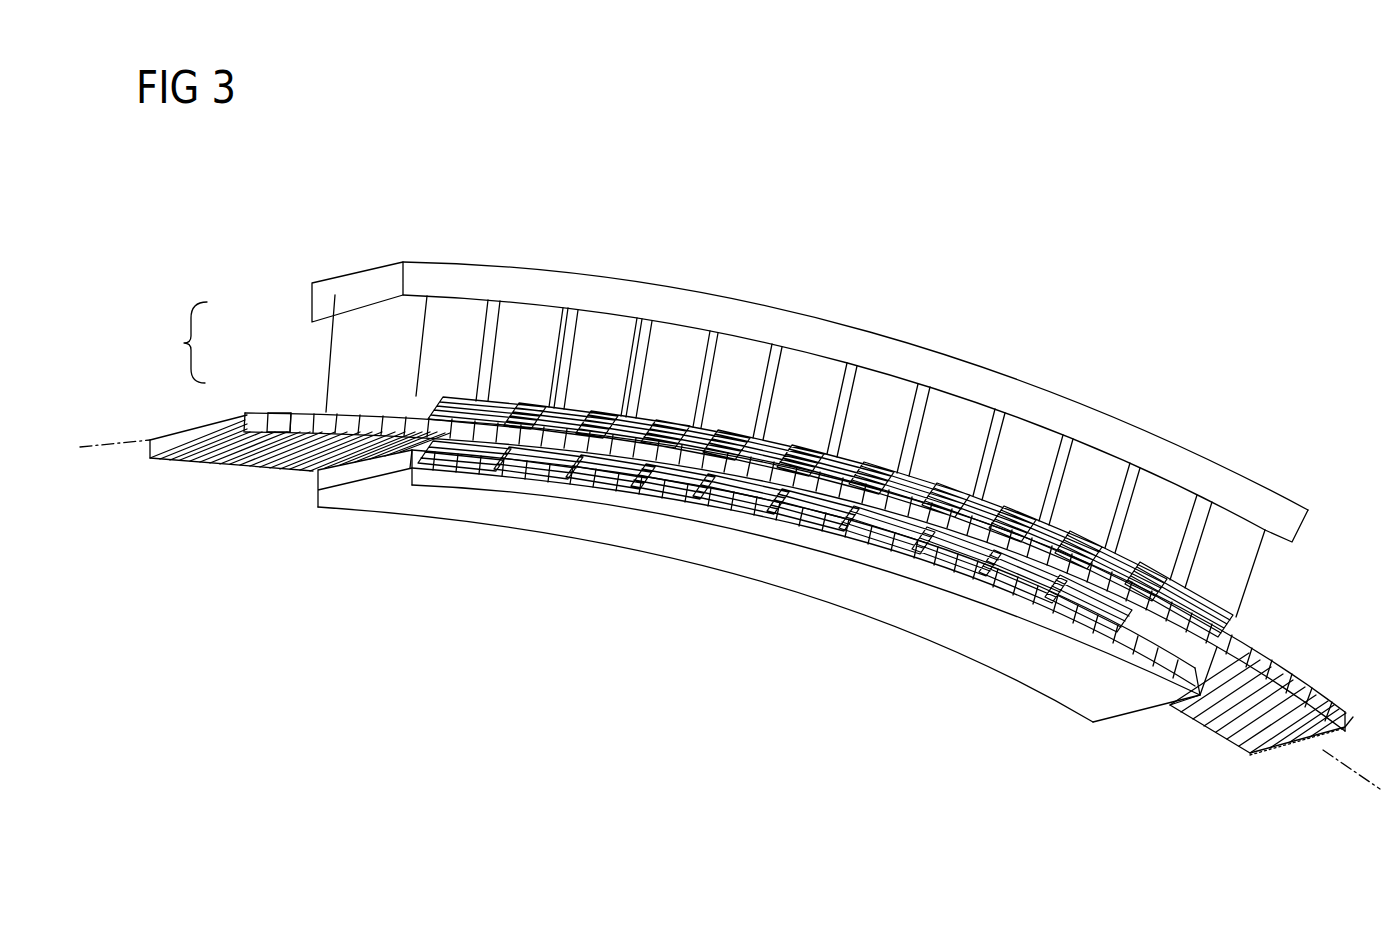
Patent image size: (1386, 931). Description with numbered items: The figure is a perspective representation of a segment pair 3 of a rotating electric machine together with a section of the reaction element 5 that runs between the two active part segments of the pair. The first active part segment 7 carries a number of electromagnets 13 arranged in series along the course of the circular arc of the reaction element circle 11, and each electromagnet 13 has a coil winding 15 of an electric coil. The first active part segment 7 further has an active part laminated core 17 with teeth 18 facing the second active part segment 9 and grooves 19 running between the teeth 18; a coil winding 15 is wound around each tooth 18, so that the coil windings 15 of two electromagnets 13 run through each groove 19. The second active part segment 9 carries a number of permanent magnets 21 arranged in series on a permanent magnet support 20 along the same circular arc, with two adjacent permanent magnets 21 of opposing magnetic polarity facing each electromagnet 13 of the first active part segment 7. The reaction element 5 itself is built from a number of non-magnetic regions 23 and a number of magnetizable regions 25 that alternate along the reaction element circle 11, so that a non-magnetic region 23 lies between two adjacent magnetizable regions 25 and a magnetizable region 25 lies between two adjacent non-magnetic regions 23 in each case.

The segment pair 3 is at (185, 342).
The reaction element 5 is at (150, 417).
The first active part segment 7 is at (300, 300).
The second active part segment 9 is at (313, 473).
The reaction element circle 11 is at (83, 453).
The electromagnet 13 is at (1246, 580).
The coil winding 15 is at (452, 338).
The active part laminated core 17 is at (557, 290).
The tooth 18 is at (790, 447).
The groove 19 is at (723, 351).
The permanent magnet support 20 is at (735, 517).
The permanent magnet 21 is at (528, 467).
The non-magnetic region 23 is at (257, 425).
The magnetizable region 25 is at (280, 427).